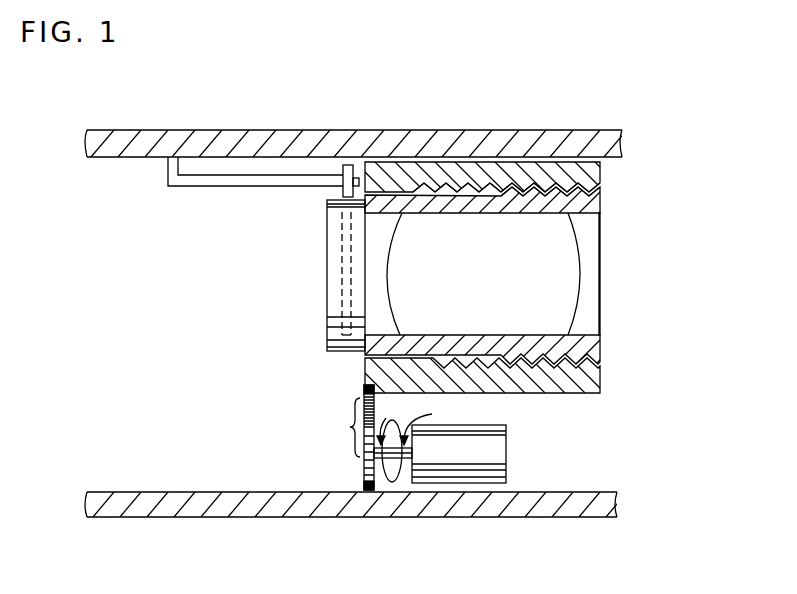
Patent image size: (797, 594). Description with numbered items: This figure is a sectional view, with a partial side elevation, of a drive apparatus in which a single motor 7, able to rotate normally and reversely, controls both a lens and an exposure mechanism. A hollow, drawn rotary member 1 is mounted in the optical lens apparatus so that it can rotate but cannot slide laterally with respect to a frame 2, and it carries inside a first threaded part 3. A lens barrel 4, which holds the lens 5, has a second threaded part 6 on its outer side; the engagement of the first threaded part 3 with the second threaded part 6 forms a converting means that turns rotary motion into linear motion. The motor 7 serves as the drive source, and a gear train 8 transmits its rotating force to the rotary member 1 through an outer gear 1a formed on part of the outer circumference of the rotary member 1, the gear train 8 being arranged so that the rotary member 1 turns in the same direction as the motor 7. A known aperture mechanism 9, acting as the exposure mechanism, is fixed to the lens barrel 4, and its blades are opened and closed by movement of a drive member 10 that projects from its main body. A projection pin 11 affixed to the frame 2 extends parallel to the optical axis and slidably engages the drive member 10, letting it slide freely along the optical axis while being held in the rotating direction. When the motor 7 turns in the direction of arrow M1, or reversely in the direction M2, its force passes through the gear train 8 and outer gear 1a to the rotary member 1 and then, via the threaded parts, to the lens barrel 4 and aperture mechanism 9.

The rotary member 1 is at (600, 165).
The outer gear 1a is at (364, 387).
The frame 2 is at (630, 147).
The first threaded part 3 is at (598, 188).
The lens barrel 4 is at (598, 214).
The lens 5 is at (580, 295).
The second threaded part 6 is at (593, 198).
The motor 7 is at (506, 470).
The gear train 8 is at (348, 427).
The aperture mechanism 9 is at (327, 283).
The drive member 10 is at (338, 192).
The projection pin 11 is at (233, 183).
The normal rotation direction of motor M1 is at (429, 420).
The reverse rotation direction of motor M2 is at (392, 420).